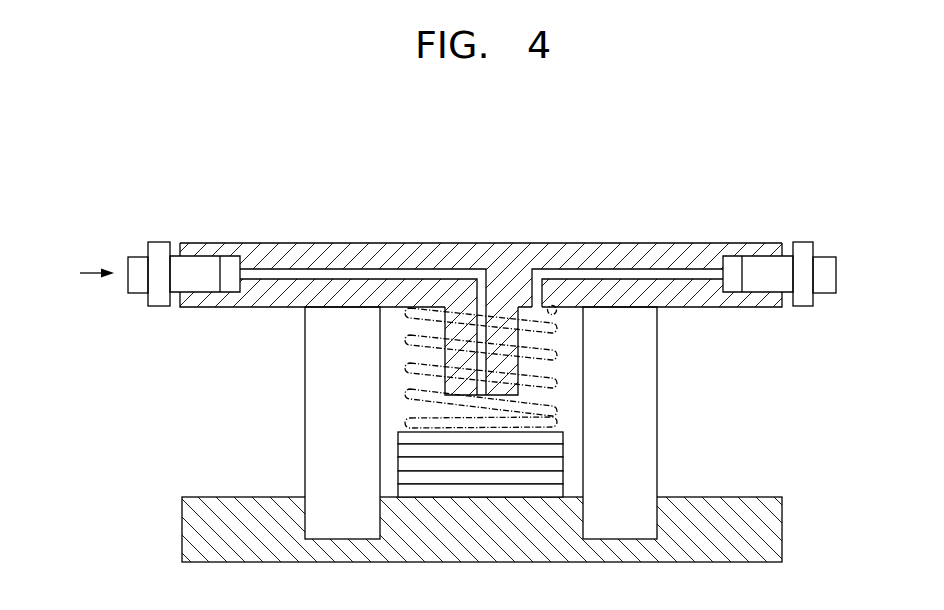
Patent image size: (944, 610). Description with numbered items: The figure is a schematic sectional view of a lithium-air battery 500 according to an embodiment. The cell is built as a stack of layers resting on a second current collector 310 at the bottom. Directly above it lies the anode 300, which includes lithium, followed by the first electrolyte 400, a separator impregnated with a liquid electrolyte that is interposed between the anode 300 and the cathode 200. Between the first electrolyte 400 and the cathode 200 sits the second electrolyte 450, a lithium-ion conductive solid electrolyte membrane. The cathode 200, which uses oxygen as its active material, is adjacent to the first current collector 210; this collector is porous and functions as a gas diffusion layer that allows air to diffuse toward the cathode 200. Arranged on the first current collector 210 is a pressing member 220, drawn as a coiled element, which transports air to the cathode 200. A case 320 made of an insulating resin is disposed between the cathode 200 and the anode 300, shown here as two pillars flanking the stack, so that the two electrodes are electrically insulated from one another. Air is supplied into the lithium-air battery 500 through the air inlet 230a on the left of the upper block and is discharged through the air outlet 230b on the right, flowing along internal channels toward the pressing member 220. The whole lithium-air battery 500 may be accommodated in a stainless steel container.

The lithium-air battery 500 is at (158, 184).
The air inlet 230a is at (138, 287).
The air outlet 230b is at (823, 287).
The pressing member 220 is at (556, 360).
The first current collector 210 is at (560, 434).
The cathode 200 is at (562, 452).
The second electrolyte 450 is at (562, 463).
The first electrolyte 400 is at (562, 477).
The anode 300 is at (562, 490).
The case 320 is at (318, 408).
The second current collector 310 is at (190, 530).